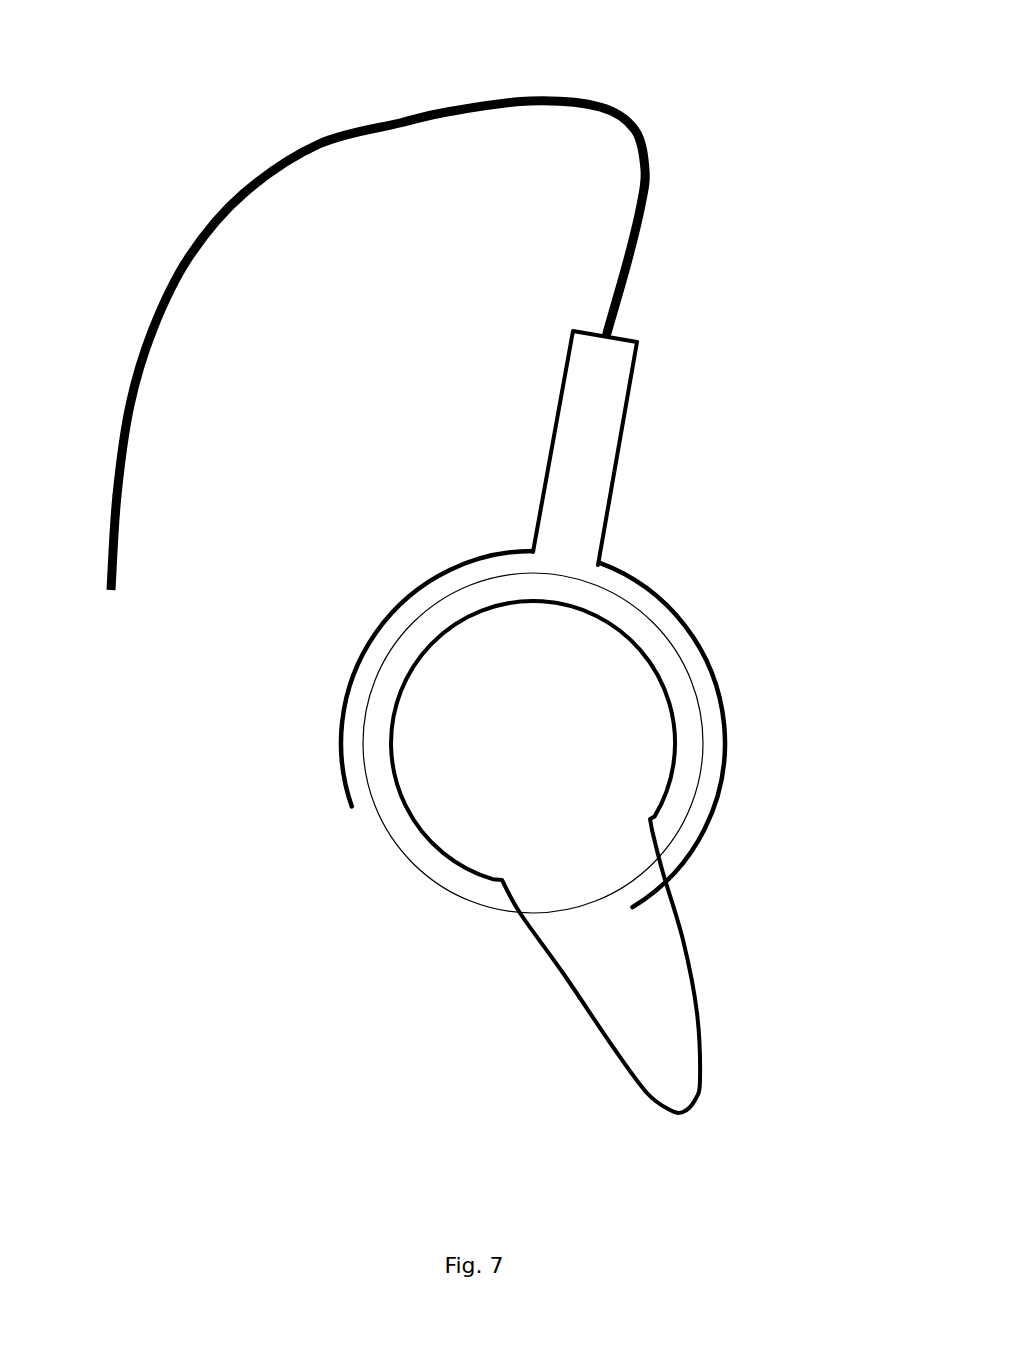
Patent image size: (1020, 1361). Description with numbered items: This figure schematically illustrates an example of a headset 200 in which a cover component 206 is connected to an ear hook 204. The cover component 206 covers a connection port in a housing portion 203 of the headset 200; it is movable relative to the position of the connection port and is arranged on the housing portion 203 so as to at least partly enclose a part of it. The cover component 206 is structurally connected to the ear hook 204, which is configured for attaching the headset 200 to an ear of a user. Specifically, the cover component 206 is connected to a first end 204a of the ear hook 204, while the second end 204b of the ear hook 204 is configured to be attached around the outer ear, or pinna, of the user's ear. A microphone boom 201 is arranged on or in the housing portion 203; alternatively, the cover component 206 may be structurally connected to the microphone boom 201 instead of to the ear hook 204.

The headset 200 is at (97, 111).
The microphone boom 201 is at (617, 1058).
The housing portion 203 is at (407, 879).
The ear hook 204 is at (538, 92).
The first end of the ear hook 204a is at (617, 545).
The second end of the ear hook 204b is at (101, 590).
The cover component 206 is at (730, 732).